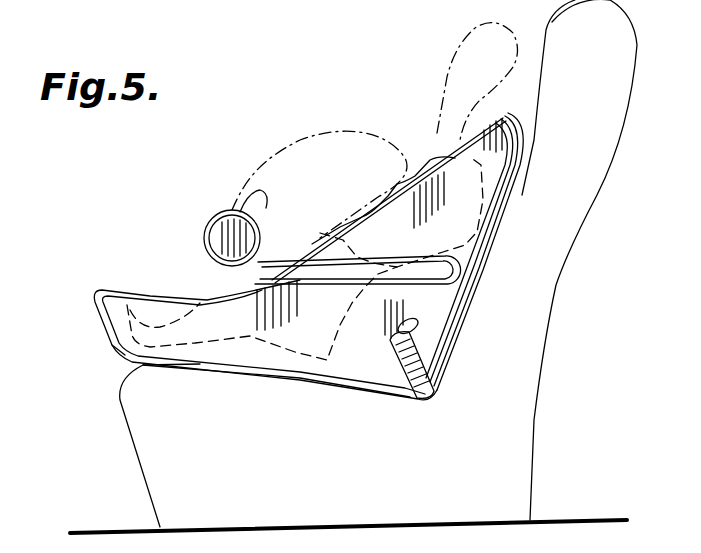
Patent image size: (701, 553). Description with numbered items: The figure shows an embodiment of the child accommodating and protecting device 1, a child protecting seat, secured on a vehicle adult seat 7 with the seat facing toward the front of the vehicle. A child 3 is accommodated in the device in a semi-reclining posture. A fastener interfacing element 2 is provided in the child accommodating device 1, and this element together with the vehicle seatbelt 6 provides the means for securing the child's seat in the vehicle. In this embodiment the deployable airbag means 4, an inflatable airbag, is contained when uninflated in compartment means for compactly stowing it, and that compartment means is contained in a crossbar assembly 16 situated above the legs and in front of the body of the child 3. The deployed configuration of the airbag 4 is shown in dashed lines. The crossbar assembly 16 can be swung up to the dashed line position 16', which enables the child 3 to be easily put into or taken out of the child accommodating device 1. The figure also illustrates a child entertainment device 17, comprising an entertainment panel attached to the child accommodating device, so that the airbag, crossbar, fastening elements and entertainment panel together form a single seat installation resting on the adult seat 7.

The child accommodating and protecting device 1 is at (88, 307).
The fastener interfacing element 2 is at (418, 323).
The child 3 is at (458, 196).
The deployable airbag means 4 is at (337, 134).
The vehicle seatbelt 6 is at (413, 362).
The vehicle adult seat 7 is at (530, 425).
The crossbar assembly 16 is at (294, 245).
The dashed line position of crossbar assembly 16' is at (460, 74).
The child entertainment device 17 is at (257, 190).